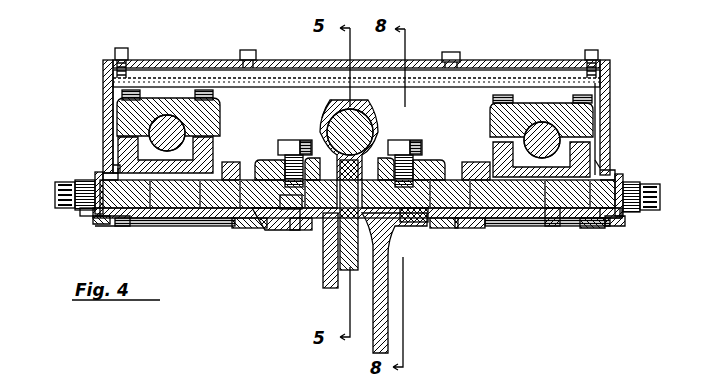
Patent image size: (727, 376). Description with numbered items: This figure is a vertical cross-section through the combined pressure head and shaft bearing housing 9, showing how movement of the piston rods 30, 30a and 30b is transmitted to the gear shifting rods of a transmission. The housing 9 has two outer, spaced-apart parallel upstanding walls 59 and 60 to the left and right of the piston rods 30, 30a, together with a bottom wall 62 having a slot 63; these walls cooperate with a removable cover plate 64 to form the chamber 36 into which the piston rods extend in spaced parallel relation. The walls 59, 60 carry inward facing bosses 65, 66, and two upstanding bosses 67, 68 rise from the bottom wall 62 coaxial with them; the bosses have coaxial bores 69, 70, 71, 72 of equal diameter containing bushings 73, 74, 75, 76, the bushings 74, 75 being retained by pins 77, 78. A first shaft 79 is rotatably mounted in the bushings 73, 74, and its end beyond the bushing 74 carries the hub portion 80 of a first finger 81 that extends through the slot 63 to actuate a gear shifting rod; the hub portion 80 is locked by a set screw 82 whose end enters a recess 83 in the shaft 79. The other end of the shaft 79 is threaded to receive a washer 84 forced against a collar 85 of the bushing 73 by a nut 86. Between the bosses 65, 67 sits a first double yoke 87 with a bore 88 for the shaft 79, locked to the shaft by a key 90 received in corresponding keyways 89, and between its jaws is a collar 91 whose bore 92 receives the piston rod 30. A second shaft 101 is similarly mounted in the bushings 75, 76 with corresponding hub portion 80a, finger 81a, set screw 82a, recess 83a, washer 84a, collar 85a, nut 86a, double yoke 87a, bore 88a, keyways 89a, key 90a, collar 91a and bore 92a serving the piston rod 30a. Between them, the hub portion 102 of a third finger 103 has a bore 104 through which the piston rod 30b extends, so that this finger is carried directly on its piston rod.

The combined pressure head and shaft bearing housing 9 is at (552, 226).
The piston rod 30 is at (152, 112).
The piston rod 30a is at (530, 135).
The piston rod 30b is at (356, 110).
The chamber 36 is at (245, 50).
The upstanding wall 59 is at (105, 95).
The upstanding wall 60 is at (604, 96).
The bottom wall 62 is at (207, 226).
The slot 63 is at (302, 232).
The removable cover plate 64 is at (172, 62).
The inward facing boss 65 is at (112, 160).
The inward facing boss 66 is at (600, 162).
The upstanding boss 67 is at (230, 162).
The upstanding boss 68 is at (482, 162).
The bore 69 is at (110, 168).
The bore 70 is at (262, 163).
The bore 71 is at (438, 165).
The bore 72 is at (606, 176).
The bushing 73 is at (85, 212).
The bushing 74 is at (258, 230).
The bushing 75 is at (448, 228).
The bushing 76 is at (612, 222).
The pin 77 is at (242, 228).
The pin 78 is at (470, 228).
The first shaft 79 is at (118, 222).
The hub portion 80 is at (312, 160).
The hub portion 80a is at (390, 160).
The first finger 81 is at (326, 285).
The finger 81a is at (386, 292).
The set screw 82 is at (286, 142).
The set screw 82a is at (420, 142).
The recess 83 is at (286, 210).
The recess 83a is at (412, 222).
The washer 84 is at (76, 207).
The washer 84a is at (628, 216).
The collar 85 is at (96, 178).
The collar 85a is at (622, 178).
The nut 86 is at (56, 195).
The nut 86a is at (650, 200).
The first double yoke 87 is at (126, 147).
The double yoke 87a is at (575, 143).
The bore 88 is at (96, 220).
The bore 88a is at (605, 224).
The rail 89 is at (192, 226).
The rail 89a is at (525, 226).
The key 90 is at (148, 208).
The key 90a is at (560, 208).
The collar 91 is at (125, 118).
The collar 91a is at (587, 122).
The bore 92 is at (172, 120).
The bore 92a is at (546, 124).
The second shaft 101 is at (592, 228).
The hub portion 102 is at (326, 112).
The third gear shifting rod operating finger 103 is at (345, 258).
The bore 104 is at (333, 104).